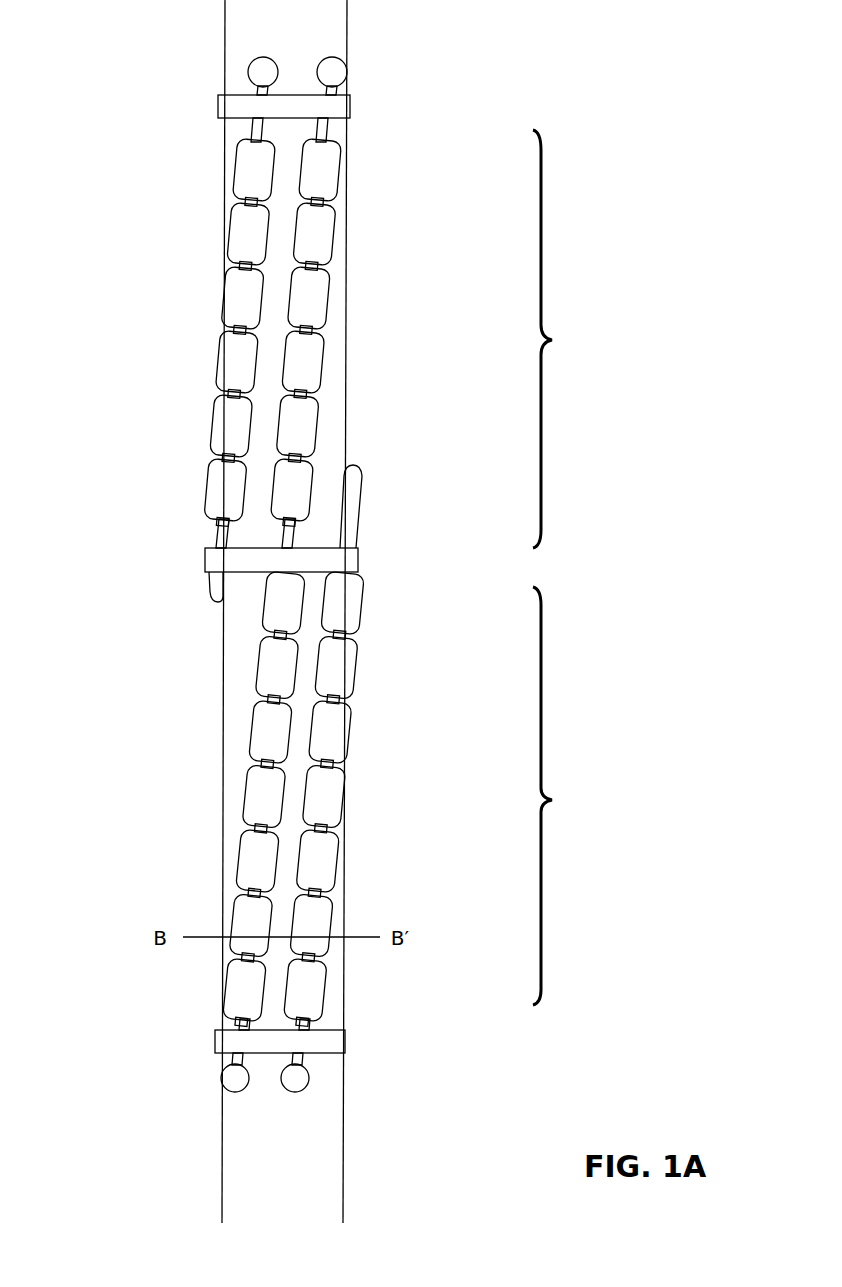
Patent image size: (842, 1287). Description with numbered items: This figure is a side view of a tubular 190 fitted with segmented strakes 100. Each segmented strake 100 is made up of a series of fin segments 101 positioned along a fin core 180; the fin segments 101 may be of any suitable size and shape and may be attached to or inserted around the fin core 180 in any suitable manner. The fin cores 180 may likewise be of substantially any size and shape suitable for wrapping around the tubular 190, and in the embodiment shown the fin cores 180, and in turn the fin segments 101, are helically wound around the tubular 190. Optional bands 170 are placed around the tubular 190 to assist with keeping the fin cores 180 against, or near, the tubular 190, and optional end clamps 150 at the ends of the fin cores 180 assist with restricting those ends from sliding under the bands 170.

The segmented strake 100 is at (572, 567).
The fin segment 101 is at (218, 240).
The end clamp 150 is at (315, 56).
The band 170 is at (357, 112).
The fin core 180 is at (362, 500).
The tubular 190 is at (235, 710).